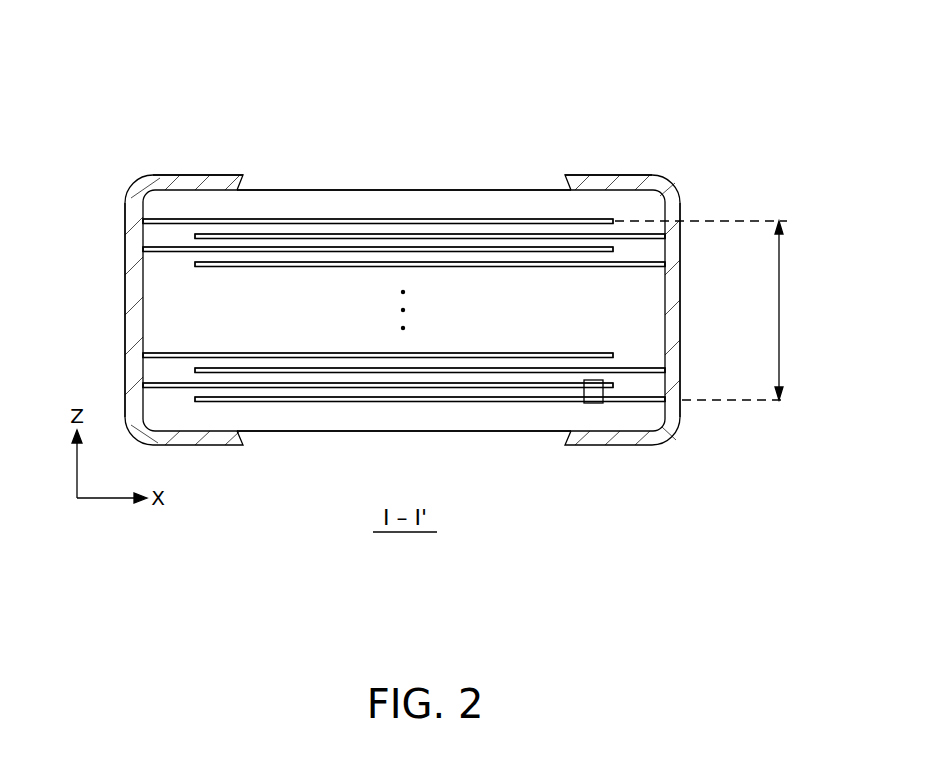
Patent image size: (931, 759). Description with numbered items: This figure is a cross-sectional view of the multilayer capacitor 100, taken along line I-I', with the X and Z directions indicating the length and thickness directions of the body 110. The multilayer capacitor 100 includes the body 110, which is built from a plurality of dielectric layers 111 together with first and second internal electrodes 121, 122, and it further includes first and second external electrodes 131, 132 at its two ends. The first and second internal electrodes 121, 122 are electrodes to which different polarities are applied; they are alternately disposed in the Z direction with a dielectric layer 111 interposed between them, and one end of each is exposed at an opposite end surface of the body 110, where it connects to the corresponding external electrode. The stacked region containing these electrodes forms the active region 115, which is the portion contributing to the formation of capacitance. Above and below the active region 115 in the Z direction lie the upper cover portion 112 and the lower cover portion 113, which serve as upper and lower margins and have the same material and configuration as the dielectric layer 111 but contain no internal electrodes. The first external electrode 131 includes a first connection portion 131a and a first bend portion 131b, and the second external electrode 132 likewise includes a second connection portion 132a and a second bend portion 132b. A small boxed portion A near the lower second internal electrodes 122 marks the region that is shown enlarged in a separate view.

The multilayer capacitor 100 is at (383, 48).
The body 110 is at (405, 311).
The dielectric layer 111 is at (643, 253).
The upper cover portion 112 is at (495, 197).
The lower cover portion 113 is at (495, 417).
The active region 115 is at (721, 310).
The first internal electrode 121 is at (163, 248).
The second internal electrode 122 is at (643, 266).
The first external electrode 131 is at (102, 110).
The first connection portion 131a is at (127, 228).
The first bend portion 131b is at (185, 178).
The second external electrode 132 is at (735, 110).
The second connection portion 132a is at (681, 214).
The second bend portion 132b is at (630, 178).
The portion A is at (603, 403).